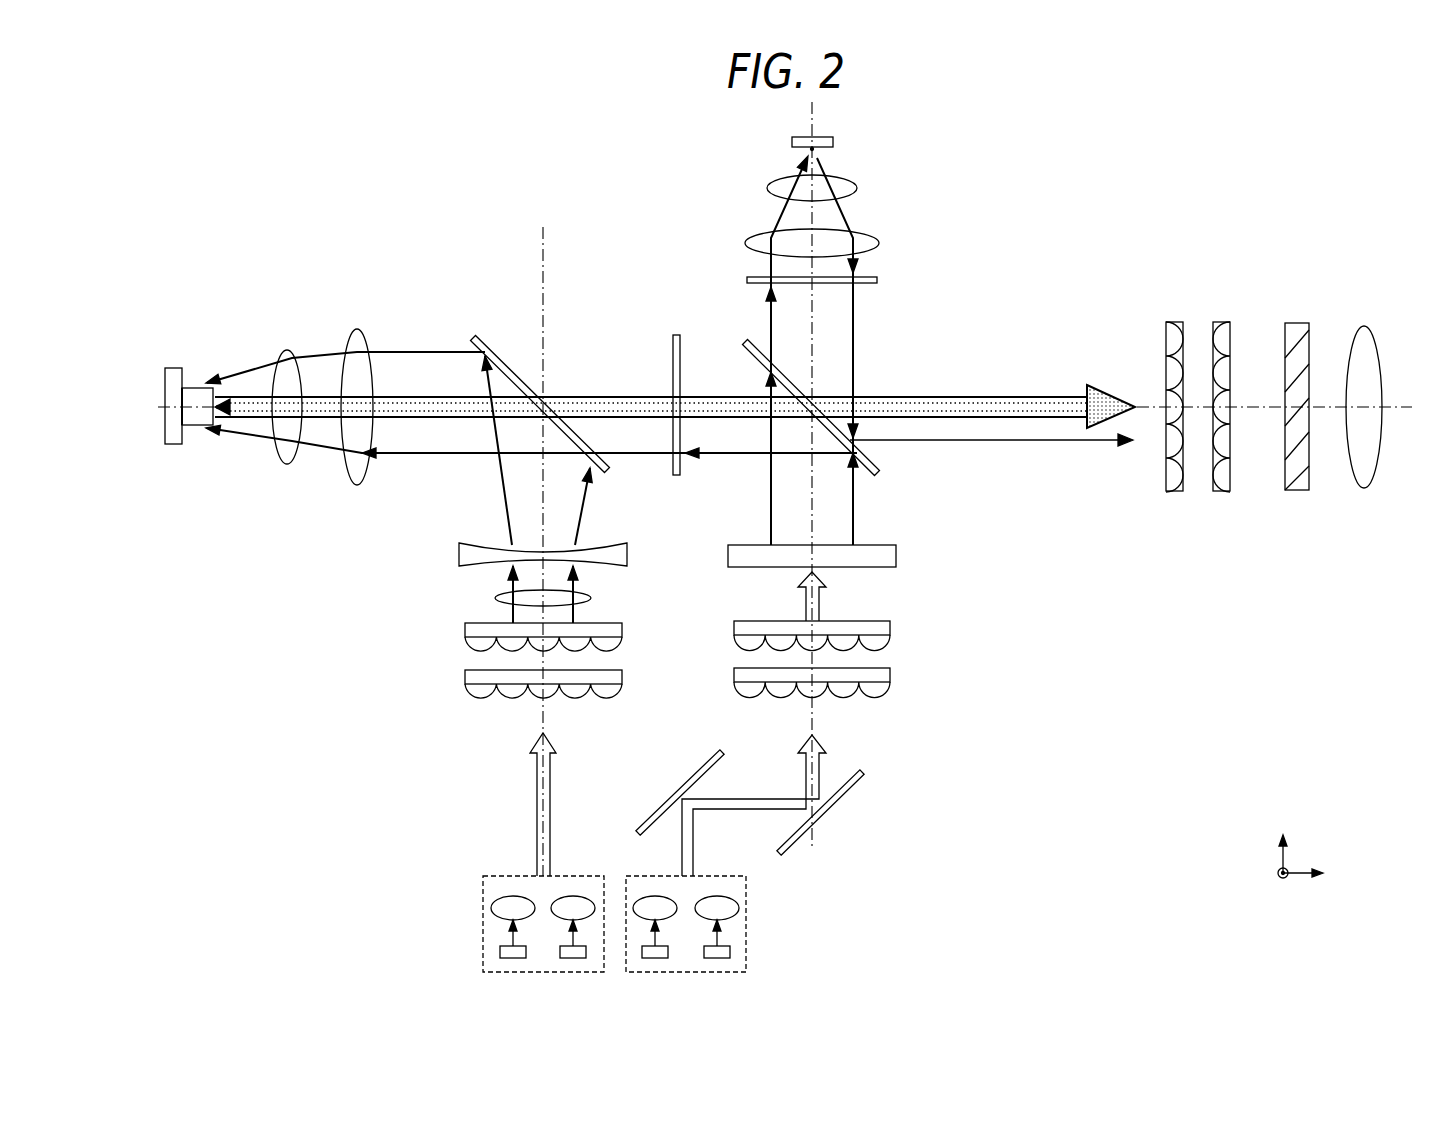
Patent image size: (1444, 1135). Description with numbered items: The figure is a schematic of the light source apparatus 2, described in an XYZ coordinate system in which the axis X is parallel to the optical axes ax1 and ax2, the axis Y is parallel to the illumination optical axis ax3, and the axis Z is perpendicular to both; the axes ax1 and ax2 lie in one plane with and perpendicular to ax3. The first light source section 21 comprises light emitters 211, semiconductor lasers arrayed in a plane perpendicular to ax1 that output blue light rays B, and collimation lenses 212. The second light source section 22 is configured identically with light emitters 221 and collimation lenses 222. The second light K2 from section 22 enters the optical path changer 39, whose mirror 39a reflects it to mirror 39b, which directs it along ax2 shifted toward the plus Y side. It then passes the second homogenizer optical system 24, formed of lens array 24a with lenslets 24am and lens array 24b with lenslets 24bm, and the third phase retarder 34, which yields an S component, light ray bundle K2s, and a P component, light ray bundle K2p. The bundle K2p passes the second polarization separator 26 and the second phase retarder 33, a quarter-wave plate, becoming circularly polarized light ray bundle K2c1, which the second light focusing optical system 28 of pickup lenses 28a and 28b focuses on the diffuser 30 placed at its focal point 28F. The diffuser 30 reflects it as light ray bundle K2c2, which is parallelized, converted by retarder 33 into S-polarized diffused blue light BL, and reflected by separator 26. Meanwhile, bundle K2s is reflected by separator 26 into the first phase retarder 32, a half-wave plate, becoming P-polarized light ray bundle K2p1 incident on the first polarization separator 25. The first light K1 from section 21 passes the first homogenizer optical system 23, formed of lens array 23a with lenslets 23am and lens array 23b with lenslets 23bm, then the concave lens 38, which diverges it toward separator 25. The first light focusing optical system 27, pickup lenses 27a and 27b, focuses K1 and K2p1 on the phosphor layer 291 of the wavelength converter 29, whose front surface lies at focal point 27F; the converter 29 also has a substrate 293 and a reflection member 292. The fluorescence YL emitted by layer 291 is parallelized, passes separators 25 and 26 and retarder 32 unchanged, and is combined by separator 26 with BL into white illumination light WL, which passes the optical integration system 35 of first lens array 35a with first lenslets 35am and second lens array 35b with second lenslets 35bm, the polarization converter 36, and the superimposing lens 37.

The light source apparatus 2 is at (1330, 198).
The first light source section 21 is at (483, 882).
The light emitters 211 is at (500, 954).
The collimation lenses 212 is at (495, 905).
The second light source section 22 is at (746, 882).
The light emitters 221 is at (730, 954).
The collimation lenses 222 is at (730, 905).
The first homogenizer optical system 23 is at (372, 628).
The lens array 23a is at (465, 678).
The lenslets 23am is at (620, 694).
The lens array 23b is at (465, 630).
The lenslets 23bm is at (620, 648).
The second homogenizer optical system 24 is at (979, 628).
The lens array 24a is at (890, 676).
The lenslets 24am is at (752, 696).
The lens array 24b is at (890, 630).
The lenslets 24bm is at (748, 648).
The first polarization separator 25 is at (480, 340).
The second polarization separator 26 is at (878, 465).
The first light focusing optical system 27 is at (378, 266).
The pickup lens 27a is at (287, 350).
The pickup lens 27b is at (353, 330).
The focal point 27F is at (222, 405).
The second light focusing optical system 28 is at (942, 165).
The pickup lens 28a is at (858, 188).
The pickup lens 28b is at (878, 236).
The focal point 28F is at (818, 152).
The wavelength converter 29 is at (207, 455).
The phosphor layer 291 is at (195, 388).
The reflection member 292 is at (197, 426).
The substrate 293 is at (172, 368).
The diffuser 30 is at (792, 142).
The first phase retarder 32 is at (676, 335).
The second phase retarder 33 is at (878, 284).
The third phase retarder 34 is at (897, 556).
The optical integration system 35 is at (1243, 222).
The first lens array 35a is at (1175, 322).
The first lenslets 35am is at (1156, 480).
The second lens array 35b is at (1222, 322).
The second lenslets 35bm is at (1242, 478).
The polarization converter 36 is at (1295, 325).
The superimposing lens 37 is at (1360, 330).
The concave lens 38 is at (459, 549).
The optical path changer 39 is at (792, 799).
The mirror 39a is at (646, 822).
The mirror 39b is at (858, 778).
The optical axis ax1 is at (540, 232).
The optical axis ax2 is at (811, 113).
The illumination optical axis ax3 is at (1398, 407).
The first light K1 is at (250, 375).
The second light K2 is at (822, 598).
The light ray bundle K2p is at (771, 330).
The light ray bundle K2p1 is at (322, 445).
The light ray bundle K2s is at (856, 522).
The light ray bundle K2c1 is at (771, 262).
The light ray bundle K2c2 is at (858, 262).
The illumination light WL is at (978, 304).
The fluorescence YL is at (1010, 395).
The diffused blue light BL is at (1045, 438).
The light rays B is at (505, 940).
The axis X is at (1283, 839).
The axis Y is at (1314, 874).
The axis Z is at (1273, 874).